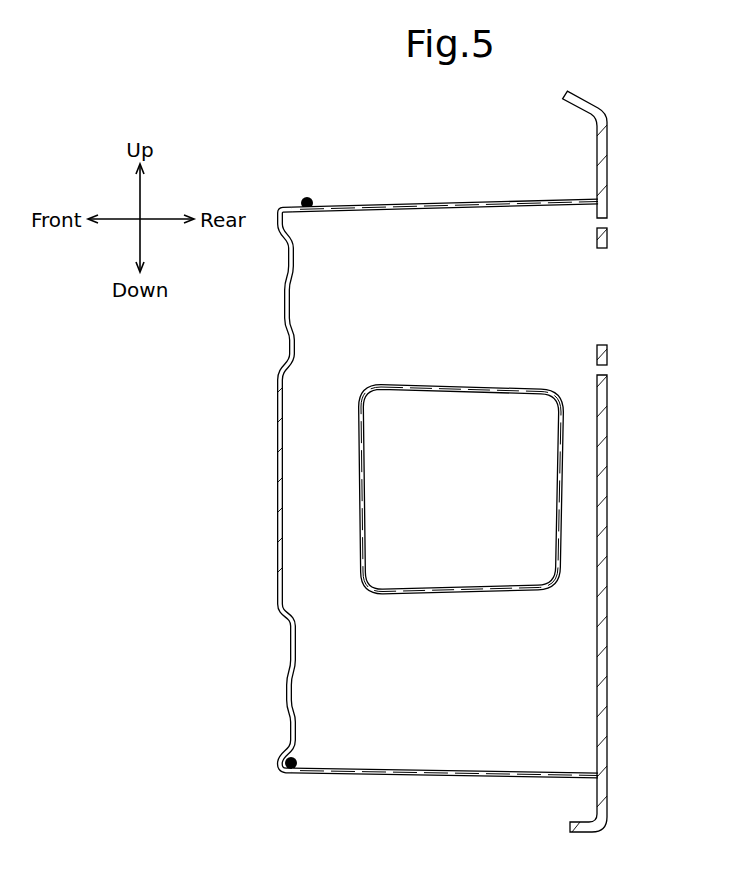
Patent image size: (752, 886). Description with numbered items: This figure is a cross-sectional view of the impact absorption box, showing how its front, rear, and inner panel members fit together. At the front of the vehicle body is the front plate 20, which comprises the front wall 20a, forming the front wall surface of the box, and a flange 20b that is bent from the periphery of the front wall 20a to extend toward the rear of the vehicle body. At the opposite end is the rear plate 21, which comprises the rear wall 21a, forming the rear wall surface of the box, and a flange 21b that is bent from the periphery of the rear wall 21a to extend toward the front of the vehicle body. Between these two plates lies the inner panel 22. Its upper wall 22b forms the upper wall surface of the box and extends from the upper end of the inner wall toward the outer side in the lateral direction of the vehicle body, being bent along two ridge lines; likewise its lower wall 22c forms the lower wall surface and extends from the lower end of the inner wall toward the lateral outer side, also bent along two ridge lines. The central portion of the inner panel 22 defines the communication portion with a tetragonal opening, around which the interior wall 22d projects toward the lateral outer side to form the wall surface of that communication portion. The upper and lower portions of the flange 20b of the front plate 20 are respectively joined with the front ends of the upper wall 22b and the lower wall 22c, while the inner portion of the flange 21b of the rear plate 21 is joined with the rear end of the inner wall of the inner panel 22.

The front plate 20 is at (399, 488).
The front wall 20a is at (279, 493).
The flange 20b is at (289, 204).
The rear plate 21 is at (626, 471).
The rear wall 21a is at (607, 482).
The flange 21b is at (590, 100).
The inner panel 22 is at (445, 458).
The upper wall 22b is at (408, 203).
The lower wall 22c is at (418, 766).
The interior wall 22d is at (462, 387).